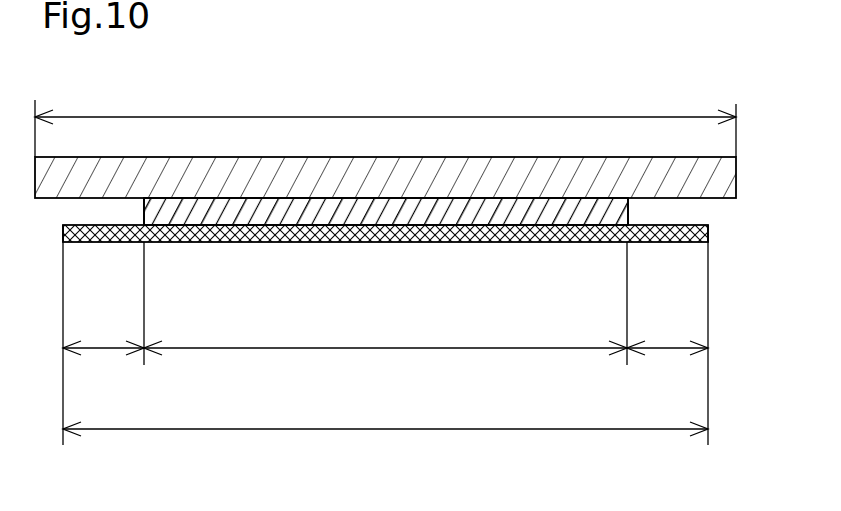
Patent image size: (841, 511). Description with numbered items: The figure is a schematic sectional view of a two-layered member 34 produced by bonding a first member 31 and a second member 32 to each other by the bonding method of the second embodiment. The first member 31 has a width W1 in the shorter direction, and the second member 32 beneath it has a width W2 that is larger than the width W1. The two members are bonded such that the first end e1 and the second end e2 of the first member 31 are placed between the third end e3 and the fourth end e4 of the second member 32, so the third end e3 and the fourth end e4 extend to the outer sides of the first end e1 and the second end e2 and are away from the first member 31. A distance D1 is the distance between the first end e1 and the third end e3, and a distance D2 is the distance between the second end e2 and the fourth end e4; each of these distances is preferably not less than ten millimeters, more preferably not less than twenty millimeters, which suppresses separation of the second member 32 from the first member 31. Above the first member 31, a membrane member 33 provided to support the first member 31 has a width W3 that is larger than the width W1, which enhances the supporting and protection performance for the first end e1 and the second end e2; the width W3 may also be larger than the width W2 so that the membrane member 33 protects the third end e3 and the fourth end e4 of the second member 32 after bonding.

The membrane member 33 is at (425, 163).
The two-layered member 34 is at (385, 259).
The first member 31 is at (417, 216).
The second member 32 is at (437, 241).
The first end e1 is at (144, 208).
The second end e2 is at (628, 214).
The third end e3 is at (63, 228).
The fourth end e4 is at (710, 233).
The width of the first member W1 is at (385, 357).
The width of the second member W2 is at (385, 440).
The width of the membrane member W3 is at (385, 125).
The distance between the first end and the third end D1 is at (103, 343).
The distance between the second end and the fourth end D2 is at (667, 343).